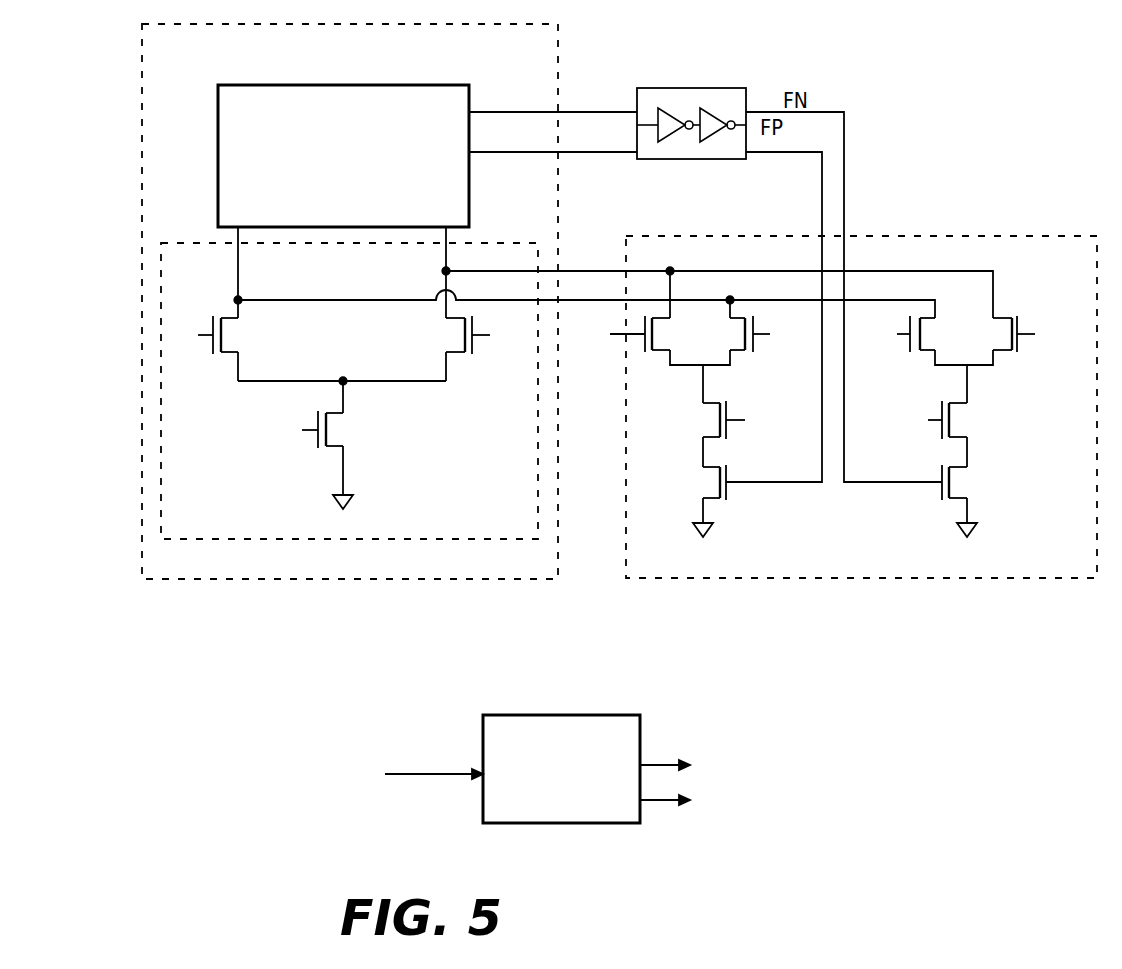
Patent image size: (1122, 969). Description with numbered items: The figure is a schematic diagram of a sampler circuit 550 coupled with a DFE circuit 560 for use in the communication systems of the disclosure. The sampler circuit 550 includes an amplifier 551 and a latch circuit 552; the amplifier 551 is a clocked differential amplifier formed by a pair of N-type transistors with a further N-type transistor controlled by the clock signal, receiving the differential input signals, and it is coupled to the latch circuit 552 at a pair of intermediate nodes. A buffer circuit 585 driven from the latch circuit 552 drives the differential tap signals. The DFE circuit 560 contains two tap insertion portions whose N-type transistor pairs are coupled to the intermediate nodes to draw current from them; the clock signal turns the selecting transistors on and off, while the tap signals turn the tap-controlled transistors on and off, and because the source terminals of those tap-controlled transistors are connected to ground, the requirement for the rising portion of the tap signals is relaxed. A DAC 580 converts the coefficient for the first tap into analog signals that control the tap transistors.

The sampler circuit 550 is at (540, 60).
The amplifier 551 is at (525, 517).
The latch circuit 552 is at (359, 206).
The DFE circuit 560 is at (1085, 276).
The DAC 580 is at (577, 794).
The buffer circuit 585 is at (722, 88).